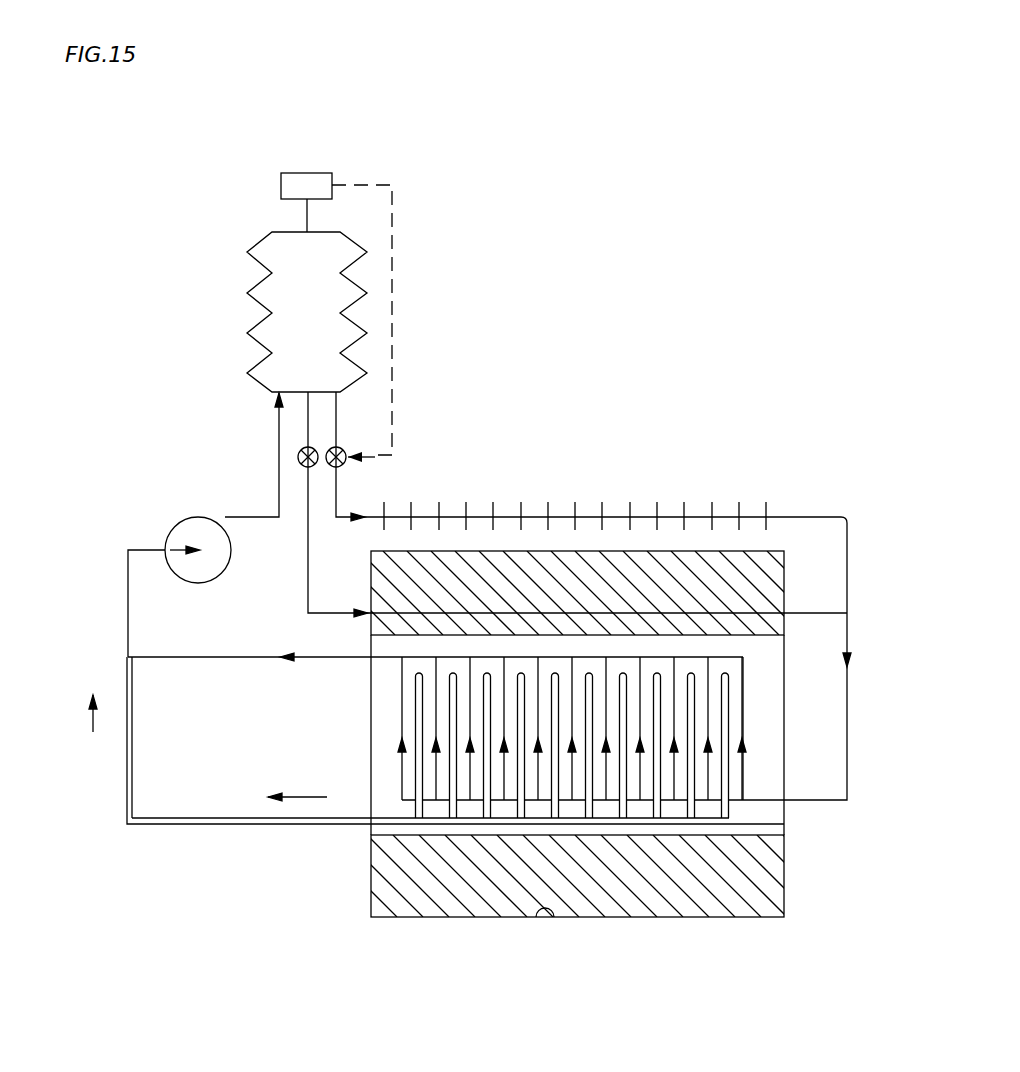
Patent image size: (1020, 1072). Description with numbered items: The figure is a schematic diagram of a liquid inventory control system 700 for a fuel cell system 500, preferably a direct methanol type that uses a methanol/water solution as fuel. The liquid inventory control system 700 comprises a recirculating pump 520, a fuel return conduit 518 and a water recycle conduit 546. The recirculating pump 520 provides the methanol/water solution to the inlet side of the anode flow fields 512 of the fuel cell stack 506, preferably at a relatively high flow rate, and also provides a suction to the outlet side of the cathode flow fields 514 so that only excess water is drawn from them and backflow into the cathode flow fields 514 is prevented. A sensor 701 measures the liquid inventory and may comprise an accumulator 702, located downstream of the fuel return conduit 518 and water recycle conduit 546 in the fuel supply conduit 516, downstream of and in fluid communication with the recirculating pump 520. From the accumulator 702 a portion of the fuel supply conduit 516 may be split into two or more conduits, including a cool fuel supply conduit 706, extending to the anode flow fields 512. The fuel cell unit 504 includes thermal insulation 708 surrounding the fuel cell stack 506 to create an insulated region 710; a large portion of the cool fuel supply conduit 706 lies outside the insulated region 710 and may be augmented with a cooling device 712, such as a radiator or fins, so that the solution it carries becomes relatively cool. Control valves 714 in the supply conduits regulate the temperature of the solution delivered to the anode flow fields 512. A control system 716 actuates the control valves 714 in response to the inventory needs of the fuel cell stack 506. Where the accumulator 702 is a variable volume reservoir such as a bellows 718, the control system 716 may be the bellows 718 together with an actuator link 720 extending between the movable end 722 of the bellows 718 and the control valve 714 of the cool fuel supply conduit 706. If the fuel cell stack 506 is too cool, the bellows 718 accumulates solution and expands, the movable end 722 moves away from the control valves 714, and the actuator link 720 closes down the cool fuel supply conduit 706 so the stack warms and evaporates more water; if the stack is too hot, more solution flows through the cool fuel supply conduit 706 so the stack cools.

The fuel cell system 500 is at (778, 310).
The fuel cell unit 504 is at (427, 917).
The fuel cell stack 506 is at (790, 710).
The anode flow field 512 is at (710, 777).
The cathode flow field 514 is at (690, 690).
The fuel supply conduit 516 is at (279, 440).
The fuel return conduit 518 is at (313, 657).
The recirculating pump 520 is at (180, 522).
The water recycle conduit 546 is at (205, 824).
The liquid inventory control system 700 is at (427, 405).
The sensor 701 is at (441, 203).
The accumulator 702 is at (258, 268).
The cool fuel supply conduit 706 is at (802, 512).
The thermal insulation 708 is at (762, 612).
The insulated region 710 is at (557, 917).
The cooling device 712 is at (500, 503).
The control valve 714 is at (310, 466).
The control system 716 is at (241, 190).
The bellows 718 is at (231, 312).
The actuator link 720 is at (392, 283).
The movable end 722 is at (333, 226).